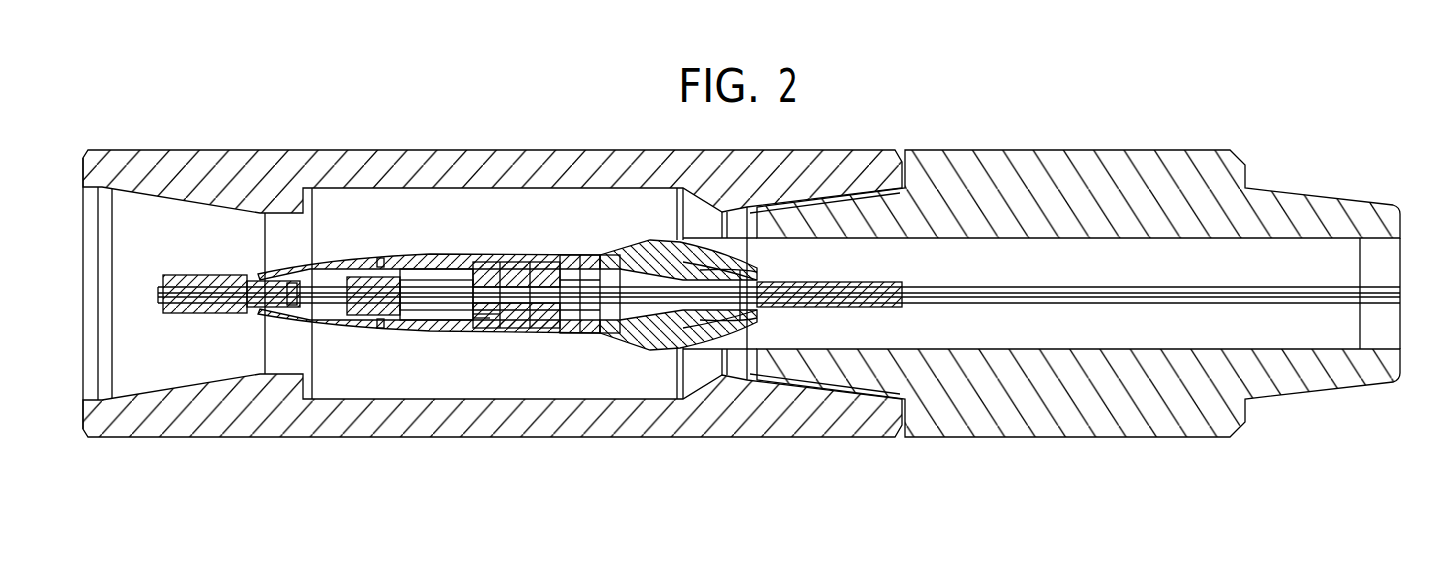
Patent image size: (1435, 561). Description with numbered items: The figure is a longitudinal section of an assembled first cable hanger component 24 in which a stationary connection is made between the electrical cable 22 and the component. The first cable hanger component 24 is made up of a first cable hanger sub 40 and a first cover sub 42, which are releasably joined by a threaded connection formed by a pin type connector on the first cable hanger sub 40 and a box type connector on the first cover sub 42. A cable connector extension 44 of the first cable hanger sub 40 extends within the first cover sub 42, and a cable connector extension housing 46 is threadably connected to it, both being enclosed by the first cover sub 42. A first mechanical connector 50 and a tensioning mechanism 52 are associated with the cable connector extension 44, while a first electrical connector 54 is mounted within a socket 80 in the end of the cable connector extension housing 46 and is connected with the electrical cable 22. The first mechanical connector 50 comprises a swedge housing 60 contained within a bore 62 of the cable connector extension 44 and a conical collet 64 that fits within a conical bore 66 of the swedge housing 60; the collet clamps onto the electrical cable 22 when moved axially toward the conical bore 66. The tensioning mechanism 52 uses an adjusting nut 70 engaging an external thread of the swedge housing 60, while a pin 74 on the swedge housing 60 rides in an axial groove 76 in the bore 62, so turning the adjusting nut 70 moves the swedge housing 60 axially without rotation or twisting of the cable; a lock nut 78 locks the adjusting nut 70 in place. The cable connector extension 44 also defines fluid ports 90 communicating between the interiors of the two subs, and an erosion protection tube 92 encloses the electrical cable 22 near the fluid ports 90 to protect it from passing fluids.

The electrical cable 22 is at (1000, 305).
The first cable hanger component 24 is at (977, 124).
The first cable hanger sub 40 is at (1165, 170).
The first cover sub 42 is at (187, 165).
The cable connector extension 44 is at (630, 342).
The cable connector extension housing 46 is at (340, 268).
The first mechanical connector 50 is at (452, 262).
The tensioning mechanism 52 is at (530, 262).
The first electrical connector 54 is at (215, 312).
The swedge housing 60 is at (520, 336).
The bore 62 is at (601, 248).
The conical collet 64 is at (465, 325).
The conical bore 66 is at (488, 325).
The adjusting nut 70 is at (491, 262).
The pin 74 is at (572, 255).
The axial groove 76 is at (572, 322).
The lock nut 78 is at (485, 325).
The socket 80 is at (275, 310).
The fluid ports 90 is at (762, 277).
The erosion protection tube 92 is at (884, 307).